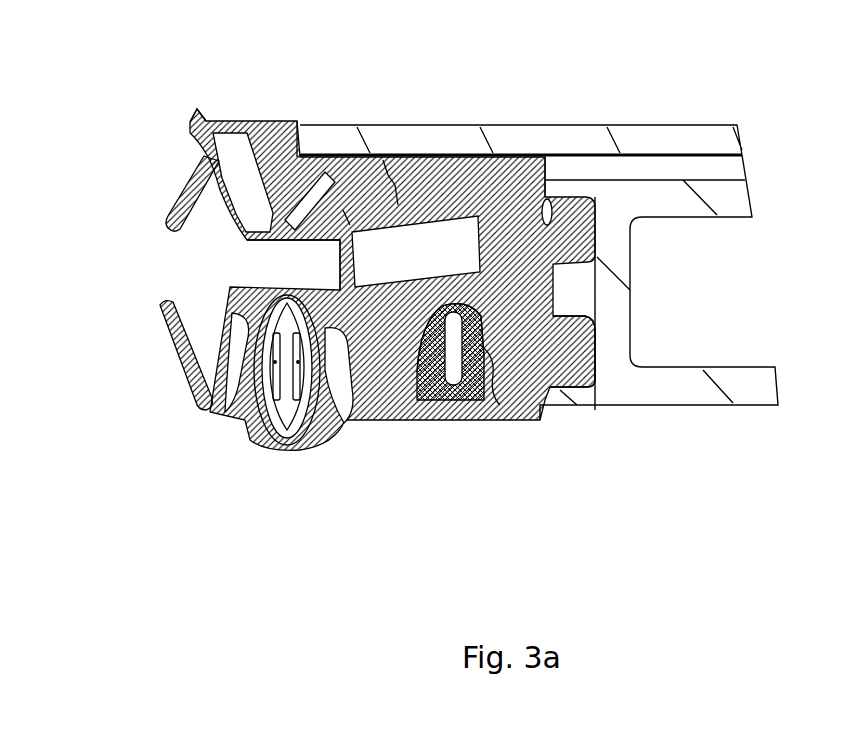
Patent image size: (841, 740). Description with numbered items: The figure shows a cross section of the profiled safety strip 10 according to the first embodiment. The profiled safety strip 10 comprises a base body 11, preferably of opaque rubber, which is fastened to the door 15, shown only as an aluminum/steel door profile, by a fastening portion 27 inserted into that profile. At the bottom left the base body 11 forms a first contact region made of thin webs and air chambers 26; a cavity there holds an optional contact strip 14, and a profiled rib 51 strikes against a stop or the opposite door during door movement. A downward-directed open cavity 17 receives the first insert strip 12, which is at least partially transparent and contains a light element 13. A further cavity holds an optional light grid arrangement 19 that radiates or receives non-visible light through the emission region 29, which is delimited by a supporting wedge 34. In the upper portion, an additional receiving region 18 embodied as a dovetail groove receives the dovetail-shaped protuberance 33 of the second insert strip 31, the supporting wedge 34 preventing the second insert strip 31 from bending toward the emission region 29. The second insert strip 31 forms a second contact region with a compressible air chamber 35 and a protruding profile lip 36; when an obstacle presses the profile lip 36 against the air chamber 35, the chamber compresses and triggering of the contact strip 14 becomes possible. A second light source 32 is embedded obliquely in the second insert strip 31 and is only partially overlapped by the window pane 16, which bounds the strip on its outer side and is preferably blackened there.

The profiled safety strip 10 is at (314, 494).
The base body 11 is at (468, 250).
The first insert strip 12 is at (423, 417).
The light element 13 is at (457, 367).
The contact strip 14 is at (262, 422).
The door 15 is at (733, 200).
The window pane 16 is at (623, 147).
The open cavity 17 is at (487, 365).
The additional receiving region 18 is at (395, 178).
The light grid arrangement 19 is at (493, 157).
The air chambers 26 is at (225, 410).
The fastening portion 27 is at (577, 353).
The emission region 29 is at (270, 270).
The second insert strip 31 is at (258, 145).
The second light source 32 is at (307, 197).
The dovetail-shaped protuberance 33 is at (388, 188).
The supporting wedge 34 is at (343, 220).
The compressible air chamber 35 is at (195, 120).
The profile lip 36 is at (180, 183).
The profiled rib 51 is at (175, 345).